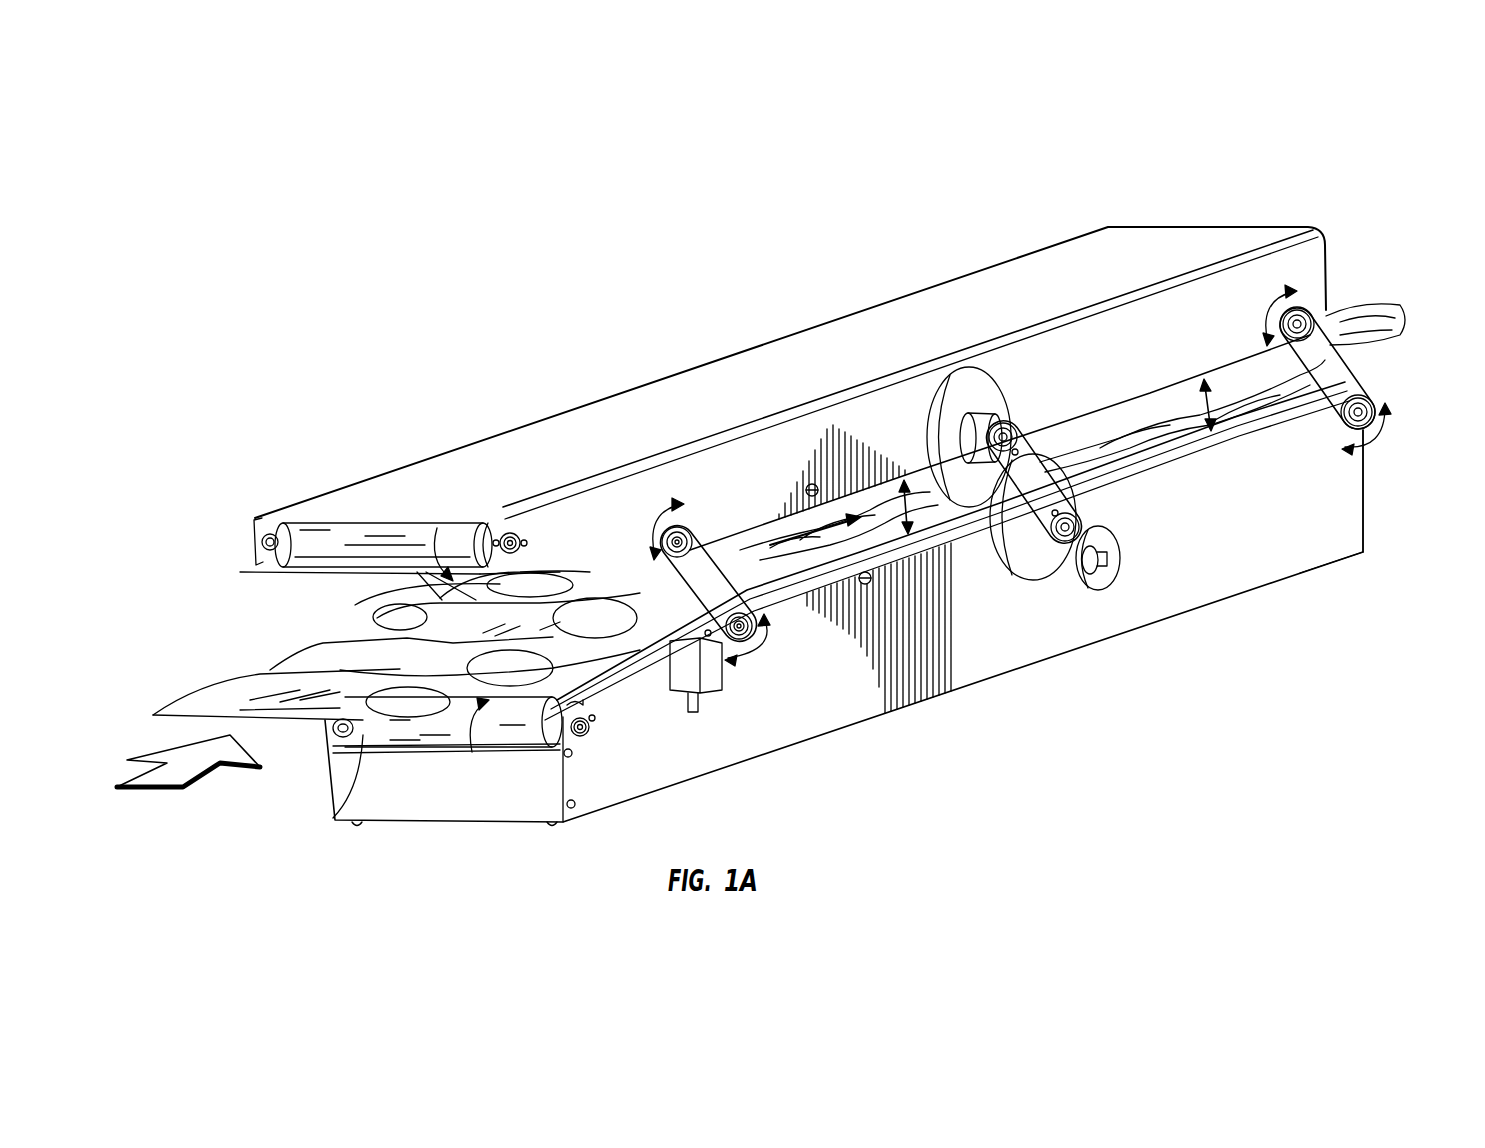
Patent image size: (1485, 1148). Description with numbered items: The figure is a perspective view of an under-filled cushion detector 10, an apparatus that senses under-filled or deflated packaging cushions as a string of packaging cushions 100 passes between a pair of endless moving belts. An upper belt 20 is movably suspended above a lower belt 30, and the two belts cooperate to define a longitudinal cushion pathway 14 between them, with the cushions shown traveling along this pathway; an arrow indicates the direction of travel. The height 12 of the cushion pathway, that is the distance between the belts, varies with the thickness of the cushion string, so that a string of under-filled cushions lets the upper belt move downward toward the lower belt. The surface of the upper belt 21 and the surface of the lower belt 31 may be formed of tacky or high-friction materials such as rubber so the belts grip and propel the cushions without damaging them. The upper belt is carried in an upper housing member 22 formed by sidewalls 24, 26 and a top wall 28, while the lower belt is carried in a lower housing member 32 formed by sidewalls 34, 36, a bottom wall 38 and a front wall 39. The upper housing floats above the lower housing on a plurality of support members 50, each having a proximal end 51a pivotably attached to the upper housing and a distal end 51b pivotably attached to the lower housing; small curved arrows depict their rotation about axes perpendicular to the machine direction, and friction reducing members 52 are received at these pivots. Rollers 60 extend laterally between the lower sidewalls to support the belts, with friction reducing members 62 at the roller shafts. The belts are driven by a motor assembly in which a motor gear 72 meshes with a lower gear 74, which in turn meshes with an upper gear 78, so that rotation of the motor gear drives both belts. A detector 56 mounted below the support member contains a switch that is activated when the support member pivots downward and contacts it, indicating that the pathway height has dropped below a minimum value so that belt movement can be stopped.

The under-filled cushion detector 10 is at (1358, 203).
The height of the cushion pathway 12 is at (930, 508).
The cushion pathway 14 is at (801, 540).
The upper belt 20 is at (335, 575).
The surface of the upper belt 21 is at (401, 561).
The upper housing member 22 is at (565, 405).
The sidewall of upper housing member 24 is at (1000, 436).
The sidewall of upper housing member 26 is at (252, 540).
The top wall 28 is at (770, 400).
The lower belt 30 is at (333, 820).
The surface of the lower belt 31 is at (453, 717).
The lower housing member 32 is at (1102, 683).
The sidewall of lower housing member 34 is at (1291, 491).
The sidewall of lower housing member 36 is at (323, 733).
The bottom wall 38 is at (1340, 570).
The front wall 39 is at (446, 776).
The support member 50 is at (692, 532).
The proximal end 51a is at (1314, 303).
The distal end 51b is at (1334, 421).
The friction reducing member 52 is at (750, 613).
The detector 56 is at (724, 682).
The roller 60 is at (572, 760).
The friction reducing member 62 is at (590, 727).
The motor gear 72 is at (1106, 535).
The lower gear 74 is at (1088, 498).
The upper gear 78 is at (993, 372).
The string of packaging cushions 100 is at (223, 678).